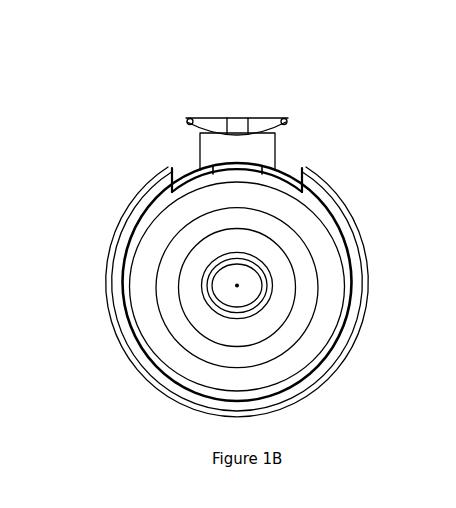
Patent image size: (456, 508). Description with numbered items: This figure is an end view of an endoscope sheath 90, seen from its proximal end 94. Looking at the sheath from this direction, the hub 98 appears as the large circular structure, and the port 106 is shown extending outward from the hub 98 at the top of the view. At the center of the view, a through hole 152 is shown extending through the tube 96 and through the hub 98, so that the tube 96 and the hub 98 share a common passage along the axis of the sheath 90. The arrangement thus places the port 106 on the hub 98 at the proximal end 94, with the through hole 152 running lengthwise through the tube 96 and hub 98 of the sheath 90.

The sheath 90 is at (100, 56).
The proximal end 94 is at (347, 137).
The tube 96 is at (273, 282).
The hub 98 is at (305, 400).
The port 106 is at (188, 121).
The through hole 152 is at (234, 259).